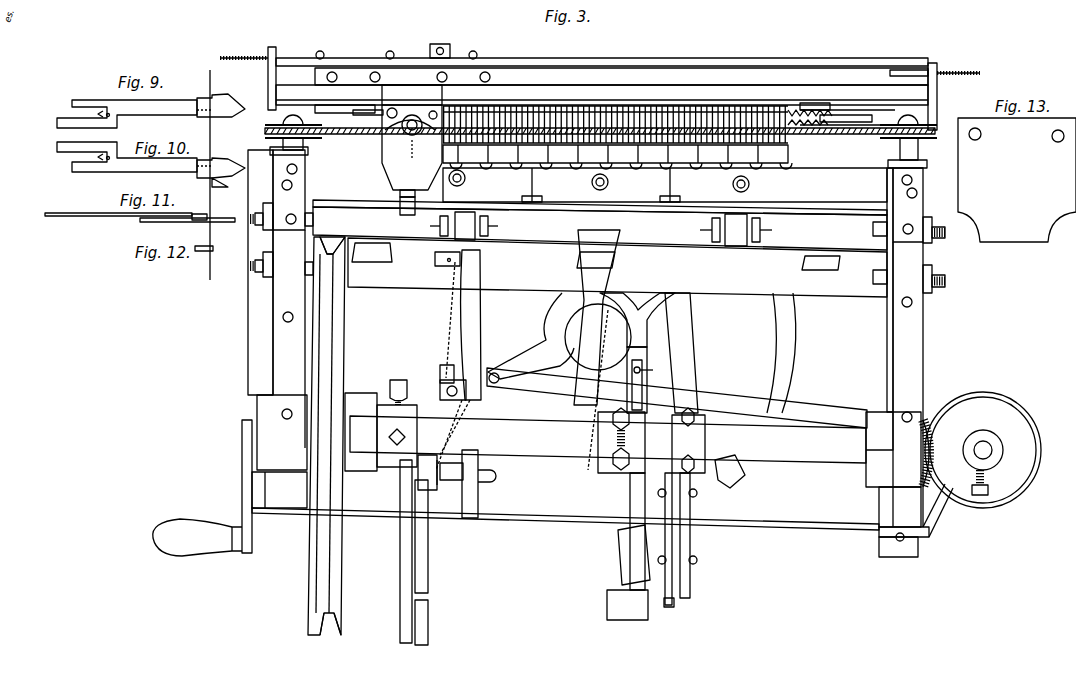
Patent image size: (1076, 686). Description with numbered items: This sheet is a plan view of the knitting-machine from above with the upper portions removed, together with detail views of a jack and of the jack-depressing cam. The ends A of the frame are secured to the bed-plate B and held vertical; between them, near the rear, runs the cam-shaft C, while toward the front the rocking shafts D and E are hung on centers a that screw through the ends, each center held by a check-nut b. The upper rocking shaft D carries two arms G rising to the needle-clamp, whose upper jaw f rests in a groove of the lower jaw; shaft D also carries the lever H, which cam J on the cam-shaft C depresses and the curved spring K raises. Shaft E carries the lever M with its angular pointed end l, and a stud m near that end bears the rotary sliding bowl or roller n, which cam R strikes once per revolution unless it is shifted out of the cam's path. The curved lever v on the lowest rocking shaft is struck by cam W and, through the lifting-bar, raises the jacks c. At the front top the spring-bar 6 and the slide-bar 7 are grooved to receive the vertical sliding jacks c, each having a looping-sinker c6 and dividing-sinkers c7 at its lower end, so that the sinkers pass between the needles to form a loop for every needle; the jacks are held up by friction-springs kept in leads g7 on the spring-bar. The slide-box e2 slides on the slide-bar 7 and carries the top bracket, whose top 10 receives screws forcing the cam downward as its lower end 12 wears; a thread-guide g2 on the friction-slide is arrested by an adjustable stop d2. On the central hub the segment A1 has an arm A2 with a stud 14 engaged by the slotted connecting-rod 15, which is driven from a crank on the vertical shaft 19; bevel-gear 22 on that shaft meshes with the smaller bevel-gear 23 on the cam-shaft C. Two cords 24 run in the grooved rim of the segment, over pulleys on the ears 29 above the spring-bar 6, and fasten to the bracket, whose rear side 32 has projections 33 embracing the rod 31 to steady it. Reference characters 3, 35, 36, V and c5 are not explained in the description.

In FIG. 3, the lever 3 is at (326, 436).
In FIG. 3, the spring-bar 6 is at (600, 134).
In FIG. 3, the slide-bar 7 is at (602, 82).
In FIG. 3, the top of the bracket 10 is at (412, 137).
In FIG. 13, the lower end of the cam 12 is at (1017, 180).
In FIG. 3, the stud 14 is at (983, 450).
In FIG. 3, the connecting-rod 15 is at (677, 398).
In FIG. 3, the vertical shaft 19 is at (293, 135).
In FIG. 3, the bevel-gear 22 is at (972, 482).
In FIG. 3, the bevel-gear 23 is at (928, 453).
In FIG. 3, the cords 24 is at (608, 128).
In FIG. 3, the ears 29 is at (909, 143).
In FIG. 3, the rod 31 is at (600, 203).
In FIG. 3, the rear side of the top bracket 32 is at (407, 187).
In FIG. 3, the projections 33 is at (407, 206).
In FIG. 3, the post 35 is at (585, 338).
In FIG. 3, the post holes 36 is at (602, 192).
In FIG. 3, the ends A is at (585, 476).
In FIG. 3, the segment of a wheel or pulley A1 is at (791, 365).
In FIG. 3, the arm A2 is at (566, 336).
In FIG. 3, the bed-plate B is at (579, 404).
In FIG. 3, the cam-shaft C is at (608, 439).
In FIG. 3, the upper rocking shaft D is at (600, 228).
In FIG. 3, the rocking shaft E is at (617, 267).
In FIG. 3, the arms G is at (601, 229).
In FIG. 3, the lever H is at (597, 350).
In FIG. 3, the cam J is at (628, 546).
In FIG. 3, the curved spring K is at (611, 439).
In FIG. 3, the lever M is at (458, 360).
In FIG. 3, the cam R is at (414, 552).
In FIG. 3, the lever V is at (681, 353).
In FIG. 3, the cam W is at (677, 540).
In FIG. 3, the centers a is at (596, 248).
In FIG. 3, the check-nut b is at (597, 248).
In FIG. 3, the jacks c is at (411, 118).
In FIG. 10, the hook c5 is at (151, 168).
In FIG. 9, the looping-sinker c6 is at (151, 109).
In FIG. 11, the dividing-sinkers c7 is at (140, 218).
In FIG. 3, the adjustable stop d2 is at (600, 84).
In FIG. 3, the slide-box e2 is at (621, 76).
In FIG. 3, the upper jaw f is at (665, 185).
In FIG. 3, the thread-guide g2 is at (446, 46).
In FIG. 3, the leads g7 is at (637, 137).
In FIG. 3, the angular pointed end l is at (479, 484).
In FIG. 3, the stud m is at (450, 472).
In FIG. 3, the bowl or roller n is at (427, 472).
In FIG. 3, the curved lever v is at (938, 510).